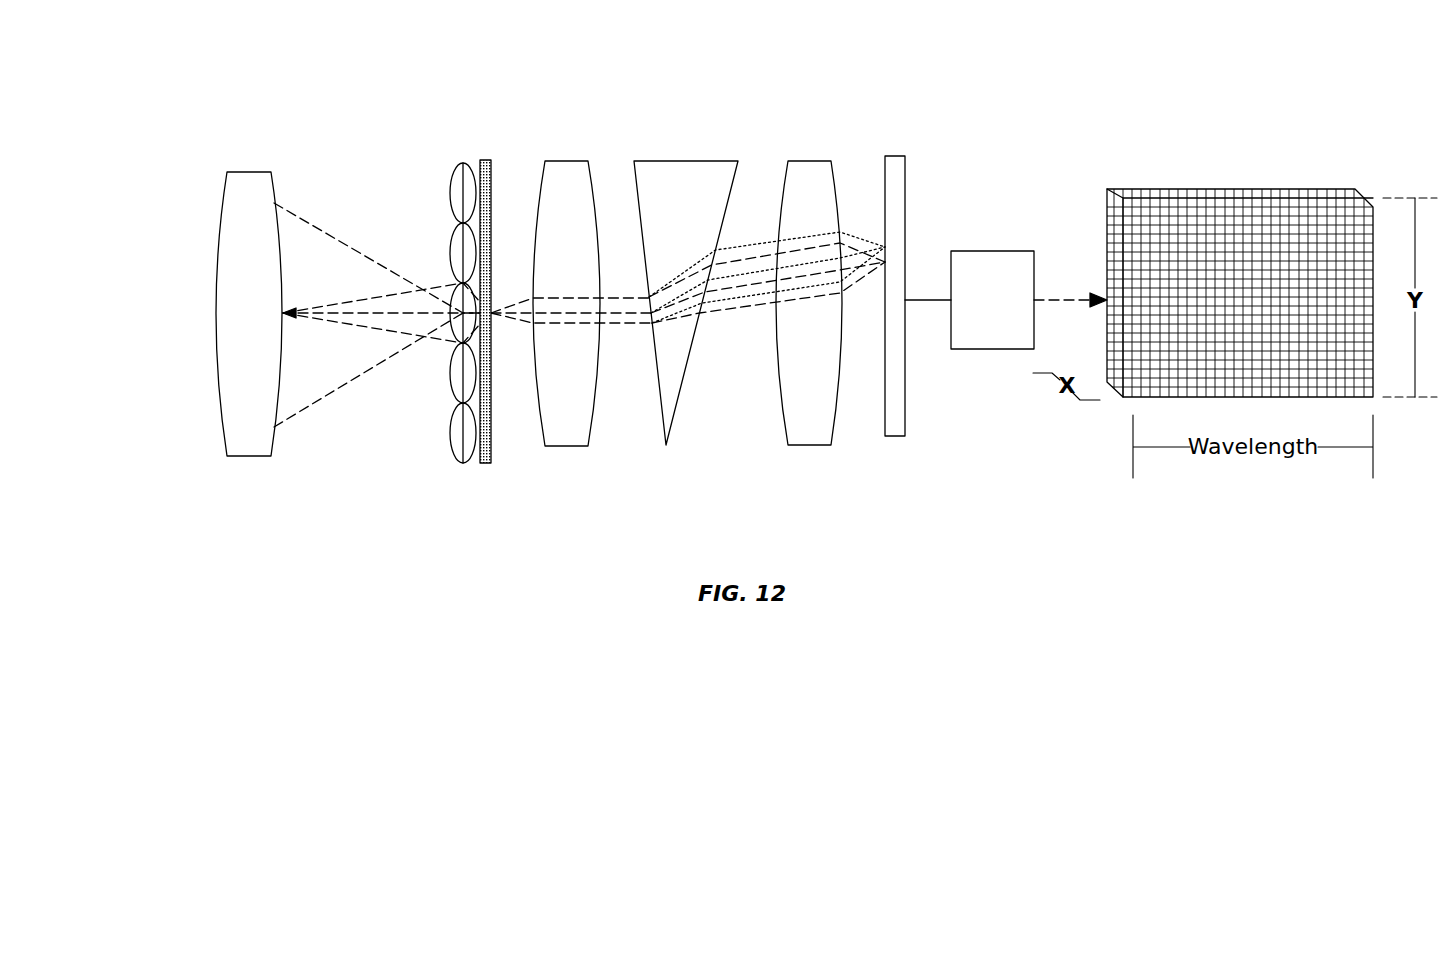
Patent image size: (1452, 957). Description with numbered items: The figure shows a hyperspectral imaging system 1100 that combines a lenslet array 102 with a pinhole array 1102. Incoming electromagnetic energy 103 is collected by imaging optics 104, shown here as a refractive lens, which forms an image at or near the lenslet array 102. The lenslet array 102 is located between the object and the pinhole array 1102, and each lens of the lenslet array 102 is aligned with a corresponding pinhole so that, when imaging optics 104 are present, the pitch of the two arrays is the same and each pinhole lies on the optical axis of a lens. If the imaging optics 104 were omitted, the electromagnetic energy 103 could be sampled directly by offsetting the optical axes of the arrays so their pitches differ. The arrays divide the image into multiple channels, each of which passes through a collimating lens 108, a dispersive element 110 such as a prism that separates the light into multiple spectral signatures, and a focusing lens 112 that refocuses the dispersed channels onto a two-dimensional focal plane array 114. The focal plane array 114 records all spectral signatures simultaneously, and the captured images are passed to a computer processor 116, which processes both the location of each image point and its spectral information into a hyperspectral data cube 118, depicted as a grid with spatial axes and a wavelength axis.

The hyperspectral imaging system 1100 is at (372, 141).
The lenslet array 102 is at (463, 163).
The pinhole array 1102 is at (492, 172).
The electromagnetic energy 103 is at (347, 383).
The imaging optics 104 is at (232, 267).
The collimating lens 108 is at (562, 197).
The dispersive element 110 is at (698, 203).
The focusing lens 112 is at (812, 195).
The focal plane array 114 is at (905, 225).
The computer processor 116 is at (980, 251).
The hyperspectral data cube 118 is at (1320, 198).